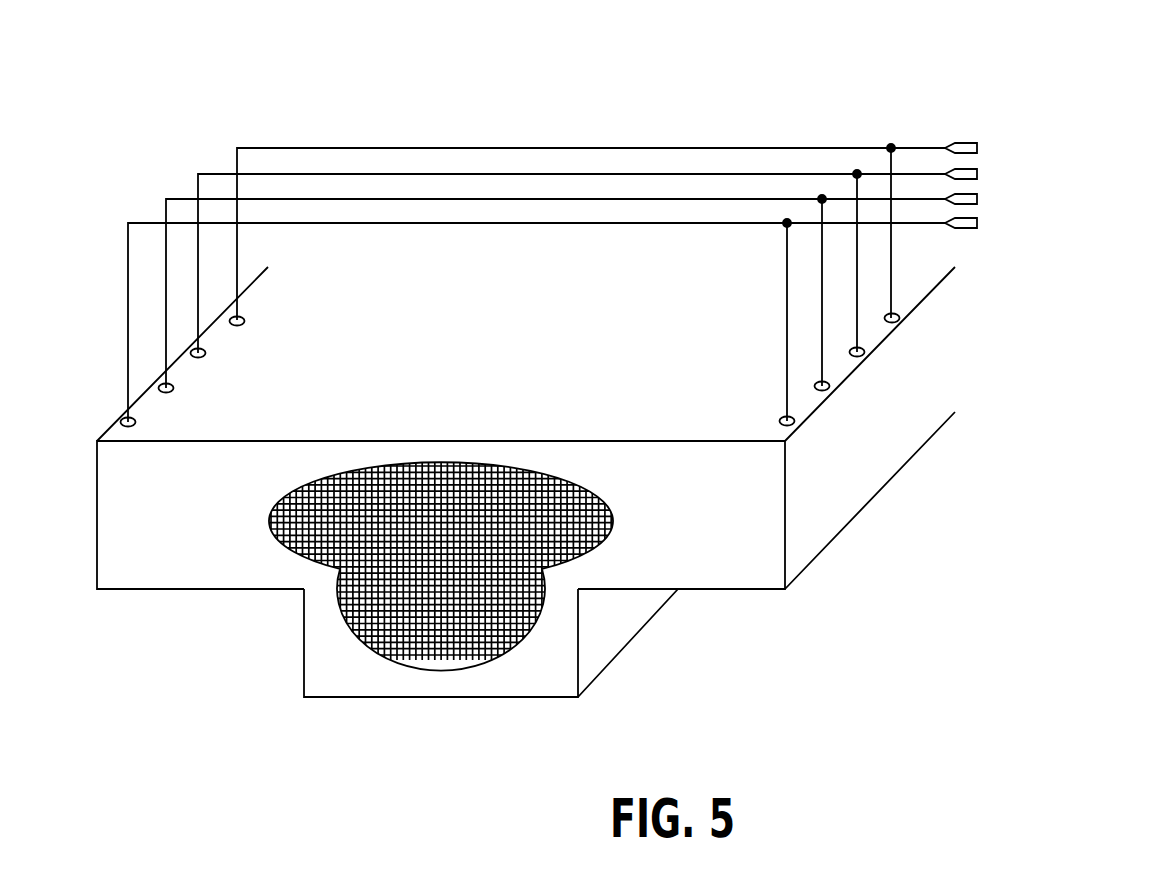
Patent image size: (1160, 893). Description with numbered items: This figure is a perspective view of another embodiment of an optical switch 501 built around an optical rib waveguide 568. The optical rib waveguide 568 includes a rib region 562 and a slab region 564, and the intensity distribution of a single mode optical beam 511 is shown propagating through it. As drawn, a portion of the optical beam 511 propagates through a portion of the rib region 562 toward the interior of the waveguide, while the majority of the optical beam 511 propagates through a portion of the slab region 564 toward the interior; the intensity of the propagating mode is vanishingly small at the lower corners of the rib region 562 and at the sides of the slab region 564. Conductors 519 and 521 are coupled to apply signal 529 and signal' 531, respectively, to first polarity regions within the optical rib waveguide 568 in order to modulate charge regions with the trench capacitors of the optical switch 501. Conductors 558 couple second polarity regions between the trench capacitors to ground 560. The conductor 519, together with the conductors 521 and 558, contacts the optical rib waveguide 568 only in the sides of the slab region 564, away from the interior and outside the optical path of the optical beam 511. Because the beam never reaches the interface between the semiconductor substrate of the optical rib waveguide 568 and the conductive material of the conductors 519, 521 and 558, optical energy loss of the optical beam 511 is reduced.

The optical switch 501 is at (862, 35).
The optical beam 511 is at (613, 523).
The conductor 519 is at (138, 223).
The conductor 521 is at (207, 175).
The signal 529 is at (1064, 223).
The signal' 531 is at (1063, 170).
The conductors 558 is at (248, 150).
The ground 560 is at (1068, 149).
The rib region 562 is at (568, 635).
The slab region 564 is at (780, 497).
The optical rib waveguide 568 is at (341, 735).